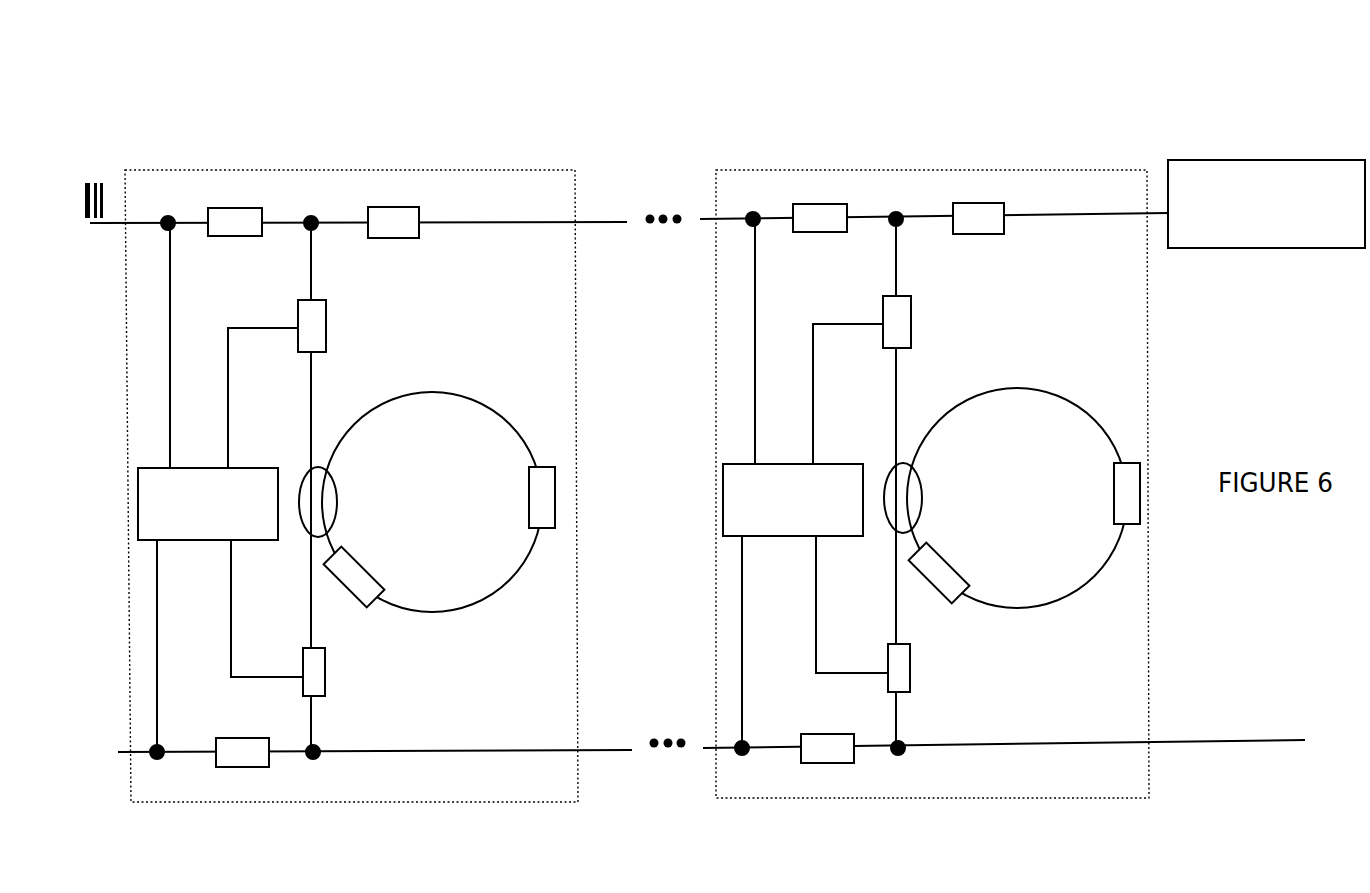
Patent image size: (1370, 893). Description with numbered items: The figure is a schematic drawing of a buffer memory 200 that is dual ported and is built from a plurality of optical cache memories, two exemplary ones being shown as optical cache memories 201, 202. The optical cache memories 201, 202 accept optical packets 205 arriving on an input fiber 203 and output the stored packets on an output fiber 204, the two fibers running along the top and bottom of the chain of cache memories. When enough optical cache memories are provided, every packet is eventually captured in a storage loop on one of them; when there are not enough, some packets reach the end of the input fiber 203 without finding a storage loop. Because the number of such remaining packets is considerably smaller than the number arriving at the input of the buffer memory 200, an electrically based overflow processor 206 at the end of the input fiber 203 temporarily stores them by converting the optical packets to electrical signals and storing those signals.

The buffer memory 200 is at (228, 98).
The optical cache memory 201 is at (492, 168).
The optical cache memory 202 is at (757, 169).
The input fiber 203 is at (626, 219).
The output fiber 204 is at (628, 749).
The optical packets 205 is at (103, 191).
The overflow processor 206 is at (1227, 160).